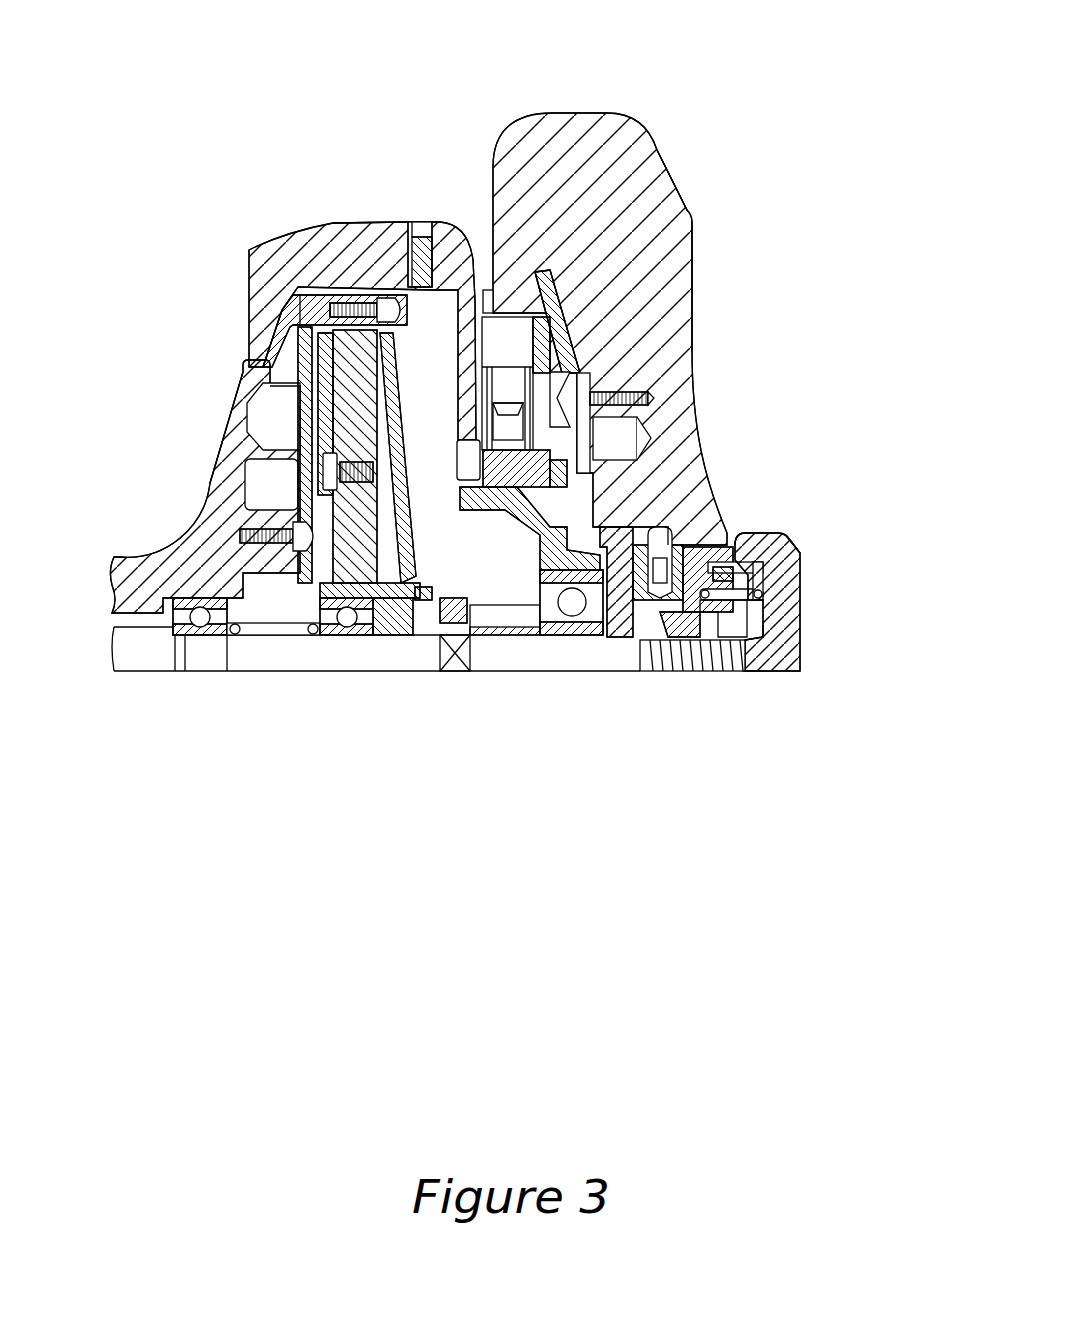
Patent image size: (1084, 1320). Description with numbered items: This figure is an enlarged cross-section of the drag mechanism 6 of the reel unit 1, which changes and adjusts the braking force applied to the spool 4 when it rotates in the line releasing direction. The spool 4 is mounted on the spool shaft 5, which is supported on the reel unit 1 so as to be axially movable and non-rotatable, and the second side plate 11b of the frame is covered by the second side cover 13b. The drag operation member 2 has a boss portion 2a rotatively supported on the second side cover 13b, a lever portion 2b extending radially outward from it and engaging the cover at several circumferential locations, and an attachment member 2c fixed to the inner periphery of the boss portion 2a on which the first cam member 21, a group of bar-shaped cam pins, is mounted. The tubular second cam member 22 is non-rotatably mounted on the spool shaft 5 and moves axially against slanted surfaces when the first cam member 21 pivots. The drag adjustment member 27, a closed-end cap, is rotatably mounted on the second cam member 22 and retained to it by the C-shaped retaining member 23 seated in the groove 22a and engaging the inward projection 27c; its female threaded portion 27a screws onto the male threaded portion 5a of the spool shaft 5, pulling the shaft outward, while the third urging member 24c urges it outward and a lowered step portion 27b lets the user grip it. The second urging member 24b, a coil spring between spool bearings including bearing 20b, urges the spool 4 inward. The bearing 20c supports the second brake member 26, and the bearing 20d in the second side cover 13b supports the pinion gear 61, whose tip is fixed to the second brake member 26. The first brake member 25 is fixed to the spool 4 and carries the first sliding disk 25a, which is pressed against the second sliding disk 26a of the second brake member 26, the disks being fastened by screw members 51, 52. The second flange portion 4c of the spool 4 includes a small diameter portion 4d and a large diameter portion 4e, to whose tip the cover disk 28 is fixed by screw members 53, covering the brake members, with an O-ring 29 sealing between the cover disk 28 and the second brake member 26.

The reel unit 1 is at (383, 131).
The drag operation member 2 is at (610, 135).
The boss portion 2a is at (655, 510).
The lever portion 2b is at (670, 190).
The attachment member 2c is at (615, 600).
The spool 4 is at (129, 545).
The second flange portion 4c is at (235, 425).
The small diameter portion 4d is at (305, 375).
The large diameter portion 4e is at (345, 290).
The spool shaft 5 is at (750, 660).
The male threaded portion 5a is at (750, 630).
The drag mechanism 6 is at (410, 364).
The second side plate 11b is at (333, 237).
The second side cover 13b is at (421, 230).
The bearing 20b is at (200, 620).
The bearing 20c is at (347, 620).
The bearing 20d is at (572, 602).
The first cam member 21 is at (657, 507).
The second cam member 22 is at (690, 535).
The groove 22a is at (800, 540).
The retaining member 23 is at (795, 568).
The second urging member 24b is at (277, 627).
The third urging member 24c is at (730, 620).
The first brake member 25 is at (275, 362).
The first sliding disk 25a is at (305, 400).
The second brake member 26 is at (300, 350).
The second sliding disk 26a is at (320, 380).
The drag adjustment member 27 is at (786, 527).
The female threaded portion 27a is at (727, 662).
The step portion 27b is at (733, 558).
The projection 27c is at (690, 580).
The cover disk 28 is at (398, 468).
The O-ring 29 is at (437, 590).
The screw member 51 is at (320, 538).
The screw member 52 is at (318, 472).
The screw member 53 is at (403, 312).
The pinion gear 61 is at (507, 612).